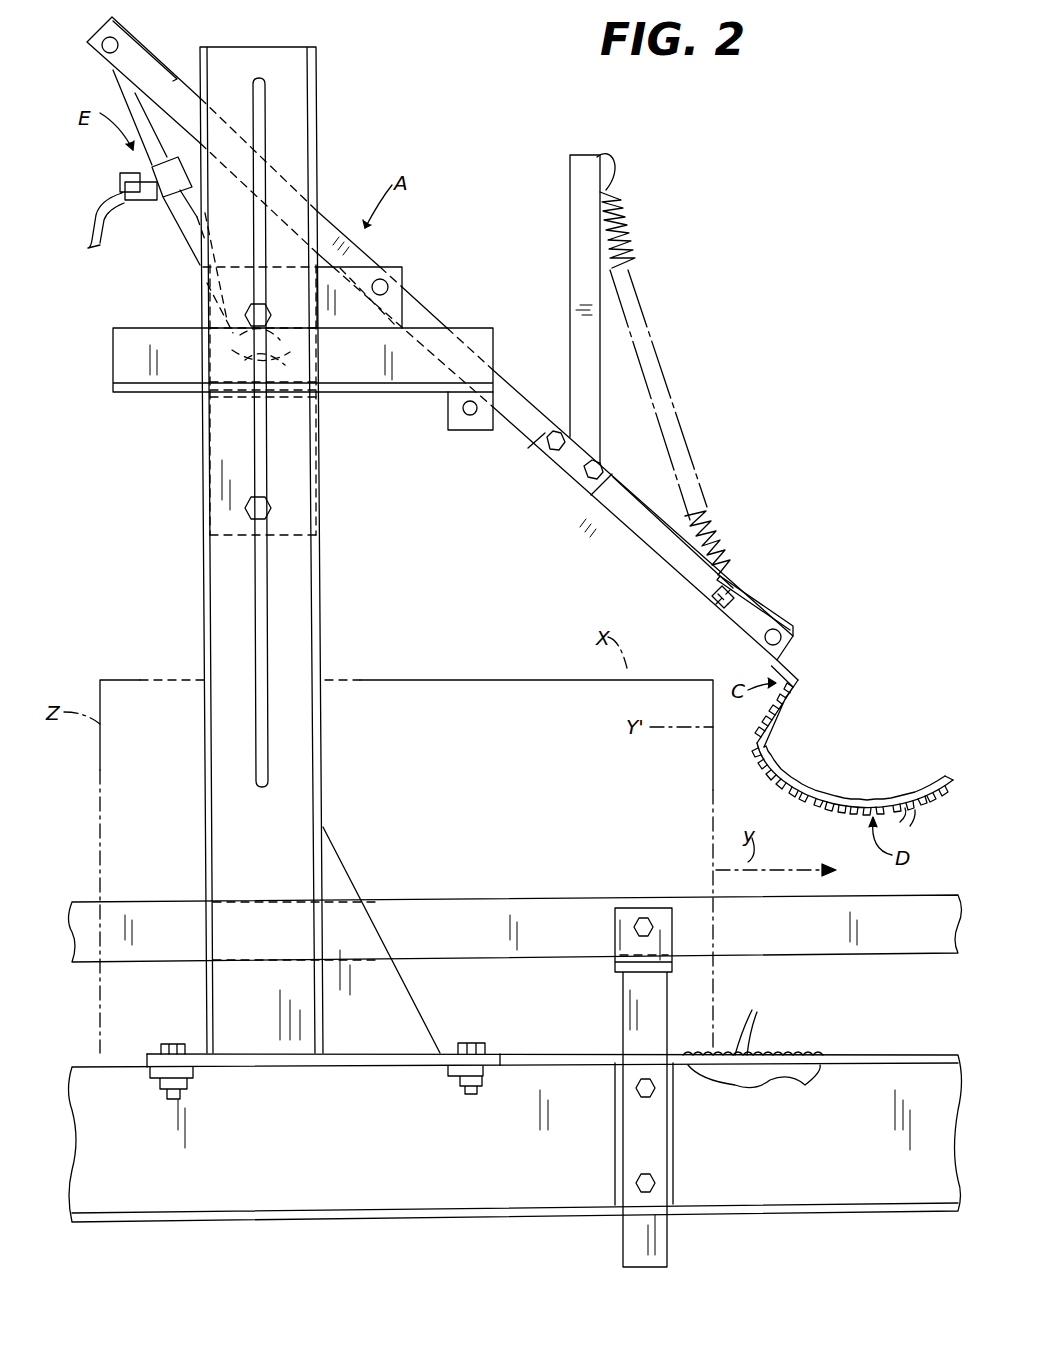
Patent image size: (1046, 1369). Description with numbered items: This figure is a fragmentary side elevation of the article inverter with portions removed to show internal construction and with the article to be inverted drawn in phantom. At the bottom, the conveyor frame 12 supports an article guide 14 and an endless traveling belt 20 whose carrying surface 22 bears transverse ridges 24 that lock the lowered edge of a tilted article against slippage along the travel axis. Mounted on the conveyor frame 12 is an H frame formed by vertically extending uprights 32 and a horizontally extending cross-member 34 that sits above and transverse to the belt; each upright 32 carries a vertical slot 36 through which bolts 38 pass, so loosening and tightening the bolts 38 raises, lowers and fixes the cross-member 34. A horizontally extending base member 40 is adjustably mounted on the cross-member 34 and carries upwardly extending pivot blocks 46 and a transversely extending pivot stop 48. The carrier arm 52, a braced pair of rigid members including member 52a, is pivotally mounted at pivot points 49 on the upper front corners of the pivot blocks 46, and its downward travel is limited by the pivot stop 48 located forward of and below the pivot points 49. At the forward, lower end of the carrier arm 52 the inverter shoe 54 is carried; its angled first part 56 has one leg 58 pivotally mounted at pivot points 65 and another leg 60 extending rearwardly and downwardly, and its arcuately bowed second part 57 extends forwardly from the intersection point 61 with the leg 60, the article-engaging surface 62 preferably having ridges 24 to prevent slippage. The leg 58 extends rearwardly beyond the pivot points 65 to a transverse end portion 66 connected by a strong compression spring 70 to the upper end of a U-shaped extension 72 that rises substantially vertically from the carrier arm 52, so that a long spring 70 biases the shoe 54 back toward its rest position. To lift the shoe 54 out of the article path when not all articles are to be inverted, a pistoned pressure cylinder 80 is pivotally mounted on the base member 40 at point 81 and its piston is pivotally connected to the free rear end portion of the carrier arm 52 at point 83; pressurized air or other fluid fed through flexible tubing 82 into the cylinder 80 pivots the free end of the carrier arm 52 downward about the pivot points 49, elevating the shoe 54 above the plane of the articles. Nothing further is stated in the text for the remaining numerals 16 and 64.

The conveyor frame 12 is at (935, 1190).
The article guides 14 is at (945, 935).
The post 16 is at (650, 1262).
The endless traveling belt 20 is at (808, 1054).
The carrying surface 22 is at (785, 1055).
The ridges 24 is at (743, 1024).
The uprights 32 is at (322, 608).
The cross-member 34 is at (292, 537).
The slot 36 is at (262, 470).
The bolts 38 is at (245, 318).
The base member 40 is at (371, 386).
The pivot blocks 46 is at (405, 288).
The pivot stop 48 is at (468, 418).
The pivot points 49 is at (386, 280).
The carrier arm 52 is at (594, 508).
The rigid member 52a is at (640, 525).
The inverter shoe 54 is at (844, 740).
The first part 56 is at (805, 692).
The second part 57 is at (835, 795).
The leg 58 is at (790, 673).
The leg 60 is at (790, 718).
The intersection point 61 is at (748, 752).
The surface 62 is at (956, 778).
The tooth end 64 is at (912, 814).
The pivot points 65 is at (790, 647).
The end portion 66 is at (718, 612).
The compression spring 70 is at (676, 408).
The U-shaped extension 72 is at (580, 268).
The pistoned pressure cylinder 80 is at (193, 232).
The pivot point 81 is at (267, 347).
The flexible tubing 82 is at (98, 207).
The pivot point 83 is at (108, 38).